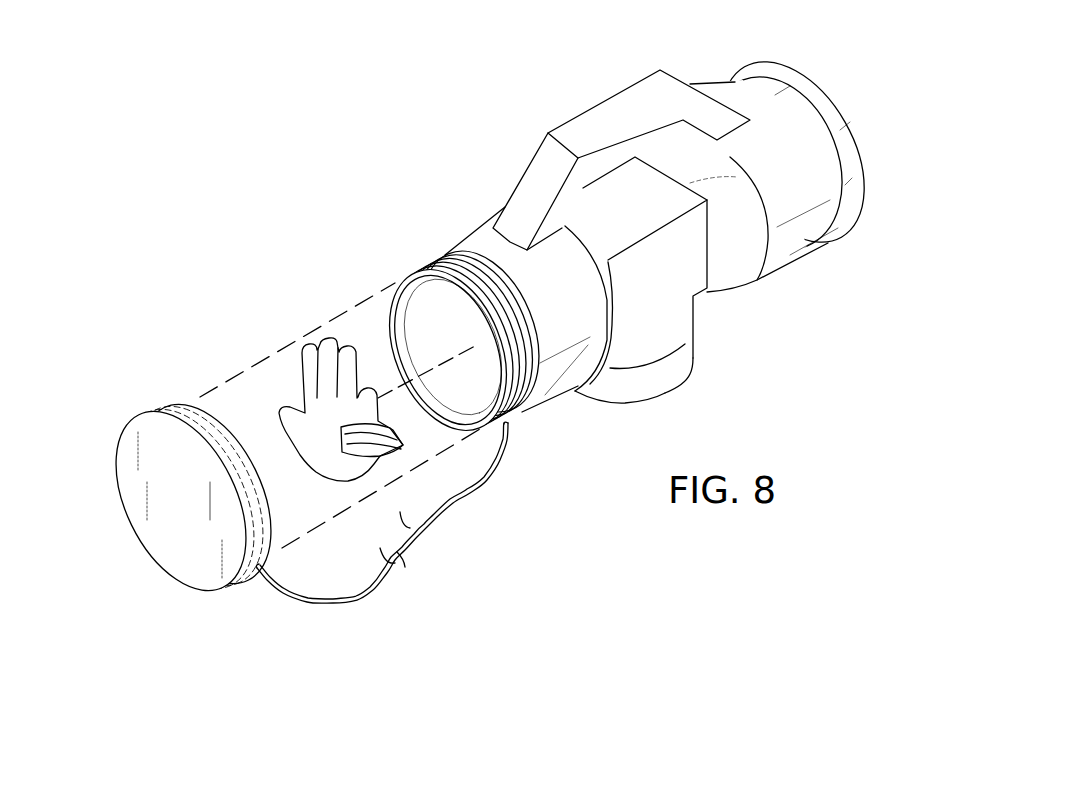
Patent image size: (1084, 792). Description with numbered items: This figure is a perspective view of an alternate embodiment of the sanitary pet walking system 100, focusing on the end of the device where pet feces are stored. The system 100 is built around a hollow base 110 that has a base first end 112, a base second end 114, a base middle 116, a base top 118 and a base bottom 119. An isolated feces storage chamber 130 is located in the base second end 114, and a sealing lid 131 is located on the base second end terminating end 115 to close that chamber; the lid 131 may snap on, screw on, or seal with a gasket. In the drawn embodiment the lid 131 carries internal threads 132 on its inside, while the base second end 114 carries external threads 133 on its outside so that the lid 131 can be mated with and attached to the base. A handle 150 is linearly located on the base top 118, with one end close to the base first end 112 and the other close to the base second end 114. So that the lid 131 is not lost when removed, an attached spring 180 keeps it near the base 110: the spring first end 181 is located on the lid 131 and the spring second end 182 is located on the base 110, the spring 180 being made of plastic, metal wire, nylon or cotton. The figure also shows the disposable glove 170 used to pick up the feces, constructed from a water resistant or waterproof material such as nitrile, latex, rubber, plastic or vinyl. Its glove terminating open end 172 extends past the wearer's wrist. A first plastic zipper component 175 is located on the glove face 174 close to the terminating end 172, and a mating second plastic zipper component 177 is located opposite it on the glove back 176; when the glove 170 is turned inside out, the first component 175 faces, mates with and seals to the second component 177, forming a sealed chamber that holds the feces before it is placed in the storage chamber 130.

The sanitary pet walking system 100 is at (440, 101).
The hollow base 110 is at (788, 282).
The base first end 112 is at (813, 102).
The base second end 114 is at (548, 397).
The base second end terminating end 115 is at (401, 278).
The base middle 116 is at (629, 273).
The base top 118 is at (627, 203).
The base bottom 119 is at (677, 387).
The feces storage chamber 130 is at (425, 306).
The sealing lid 131 is at (145, 535).
The internal threads 132 is at (172, 410).
The external threads 133 is at (432, 267).
The handle 150 is at (605, 116).
The disposable glove 170 is at (369, 485).
The glove terminating open end 172 is at (377, 447).
The glove face 174 is at (330, 420).
The first plastic zipper component 175 is at (388, 438).
The glove back 176 is at (352, 462).
The second plastic zipper component 177 is at (387, 452).
The spring 180 is at (388, 538).
The spring first end 181 is at (259, 568).
The spring second end 182 is at (508, 444).